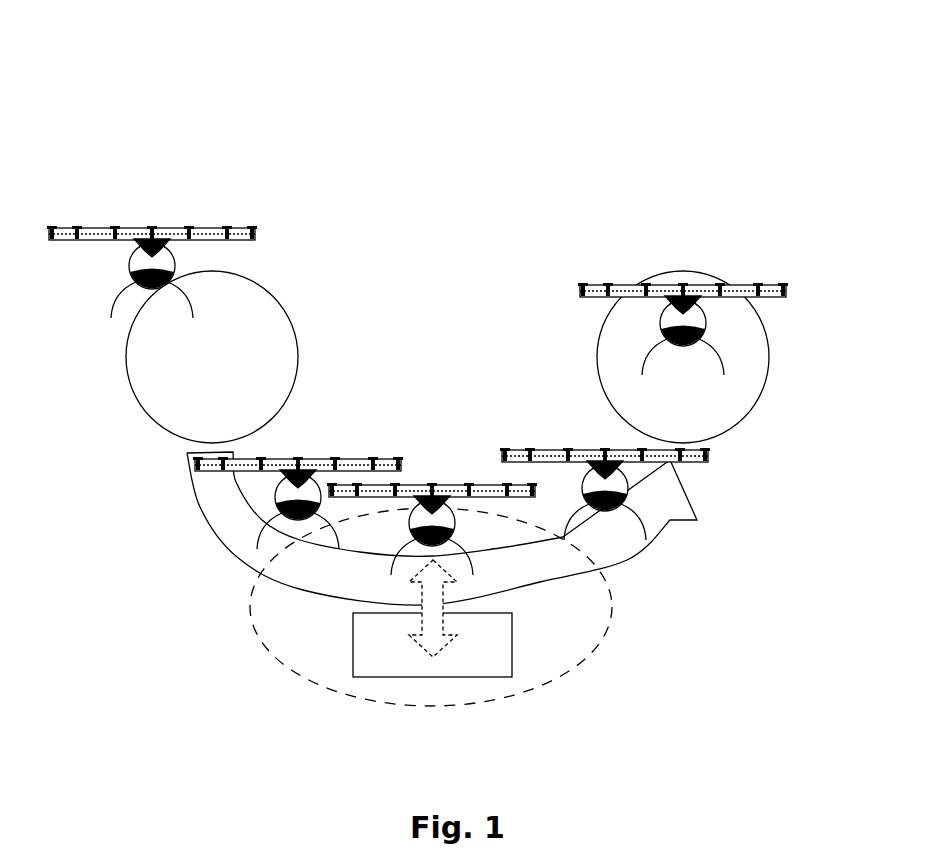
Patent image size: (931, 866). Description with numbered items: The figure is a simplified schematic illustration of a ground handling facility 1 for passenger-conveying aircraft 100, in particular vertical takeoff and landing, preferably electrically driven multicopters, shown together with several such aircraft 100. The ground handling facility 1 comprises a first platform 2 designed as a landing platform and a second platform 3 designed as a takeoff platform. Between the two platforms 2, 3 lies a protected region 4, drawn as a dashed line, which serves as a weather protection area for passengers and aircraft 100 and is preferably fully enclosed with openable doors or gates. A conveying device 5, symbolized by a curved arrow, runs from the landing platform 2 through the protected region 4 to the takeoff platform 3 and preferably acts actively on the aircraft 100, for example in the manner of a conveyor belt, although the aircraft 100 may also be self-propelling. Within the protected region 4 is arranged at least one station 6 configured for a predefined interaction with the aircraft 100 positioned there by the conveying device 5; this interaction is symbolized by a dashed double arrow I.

The ground handling facility 1 is at (553, 143).
The first platform 2 is at (288, 312).
The second platform 3 is at (770, 353).
The protected region 4 is at (568, 673).
The conveying device 5 is at (627, 557).
The station 6 is at (383, 678).
The interaction I is at (445, 647).
The aircraft 100 is at (130, 258).